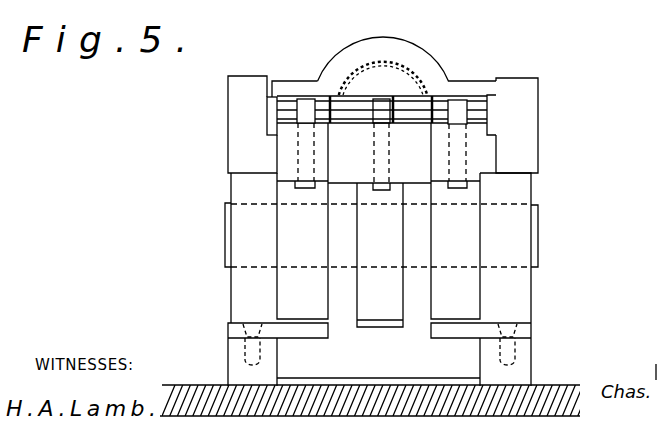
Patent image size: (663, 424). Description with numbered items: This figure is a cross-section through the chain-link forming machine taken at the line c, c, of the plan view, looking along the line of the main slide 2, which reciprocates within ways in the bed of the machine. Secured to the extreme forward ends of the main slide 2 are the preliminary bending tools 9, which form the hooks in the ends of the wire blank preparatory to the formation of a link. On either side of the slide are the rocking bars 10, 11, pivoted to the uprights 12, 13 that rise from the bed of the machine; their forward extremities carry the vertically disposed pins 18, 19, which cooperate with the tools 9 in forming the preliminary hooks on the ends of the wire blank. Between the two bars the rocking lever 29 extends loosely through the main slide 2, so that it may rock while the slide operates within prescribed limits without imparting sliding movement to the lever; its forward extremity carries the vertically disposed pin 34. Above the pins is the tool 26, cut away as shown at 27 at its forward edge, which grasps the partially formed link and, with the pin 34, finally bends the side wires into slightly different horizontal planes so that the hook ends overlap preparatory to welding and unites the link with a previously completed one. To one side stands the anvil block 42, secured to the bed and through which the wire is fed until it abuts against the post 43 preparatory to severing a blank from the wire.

The main slide 2 is at (375, 378).
The preliminary bending tools 9 is at (290, 99).
The rocking bar 10 is at (277, 152).
The rocking bar 11 is at (485, 155).
The upright 12 is at (276, 279).
The upright 13 is at (484, 279).
The vertically disposed pin 18 is at (300, 119).
The vertically disposed pin 19 is at (462, 115).
The tool 26 is at (423, 97).
The cut-away 27 is at (408, 108).
The rocking lever 29 is at (379, 235).
The vertically disposed pin 34 is at (366, 96).
The anvil block 42 is at (502, 113).
The post 43 is at (278, 107).